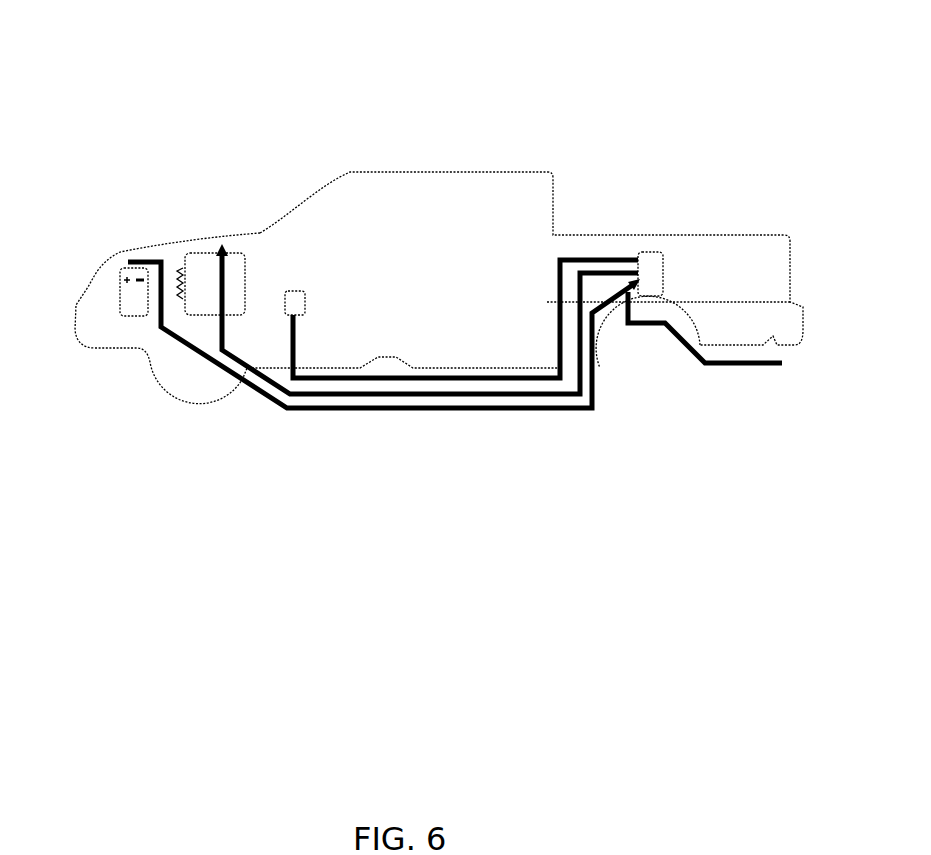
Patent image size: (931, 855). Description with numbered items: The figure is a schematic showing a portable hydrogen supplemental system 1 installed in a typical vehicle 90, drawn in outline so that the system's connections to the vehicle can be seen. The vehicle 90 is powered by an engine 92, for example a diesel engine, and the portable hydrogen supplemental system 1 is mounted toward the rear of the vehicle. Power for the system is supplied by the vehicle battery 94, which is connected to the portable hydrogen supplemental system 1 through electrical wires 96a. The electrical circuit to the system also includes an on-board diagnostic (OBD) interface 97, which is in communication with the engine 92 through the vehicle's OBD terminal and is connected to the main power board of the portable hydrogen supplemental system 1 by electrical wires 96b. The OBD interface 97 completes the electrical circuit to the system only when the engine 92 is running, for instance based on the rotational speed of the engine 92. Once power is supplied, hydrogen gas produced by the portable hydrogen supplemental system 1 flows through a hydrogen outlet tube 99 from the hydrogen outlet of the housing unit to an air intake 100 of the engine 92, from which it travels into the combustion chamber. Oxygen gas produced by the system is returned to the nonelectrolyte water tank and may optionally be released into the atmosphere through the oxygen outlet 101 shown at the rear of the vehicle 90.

The vehicle 90 is at (336, 78).
The vehicle battery 94 is at (115, 294).
The air intake 100 is at (200, 243).
The engine 92 is at (248, 277).
The on-board diagnostic (OBD) interface 97 is at (304, 303).
The electrical wires 96a is at (397, 412).
The electrical wires 96b is at (390, 377).
The hydrogen outlet tube 99 is at (463, 390).
The portable hydrogen supplemental system 1 is at (665, 264).
The oxygen outlet 101 is at (747, 367).